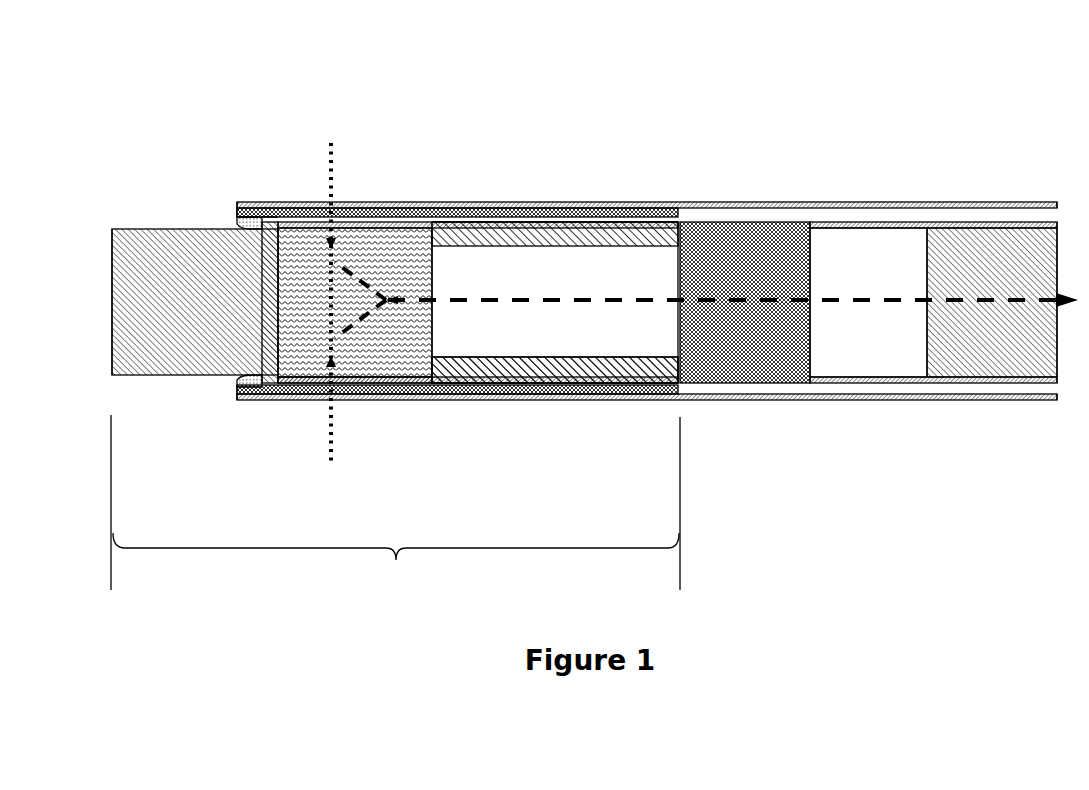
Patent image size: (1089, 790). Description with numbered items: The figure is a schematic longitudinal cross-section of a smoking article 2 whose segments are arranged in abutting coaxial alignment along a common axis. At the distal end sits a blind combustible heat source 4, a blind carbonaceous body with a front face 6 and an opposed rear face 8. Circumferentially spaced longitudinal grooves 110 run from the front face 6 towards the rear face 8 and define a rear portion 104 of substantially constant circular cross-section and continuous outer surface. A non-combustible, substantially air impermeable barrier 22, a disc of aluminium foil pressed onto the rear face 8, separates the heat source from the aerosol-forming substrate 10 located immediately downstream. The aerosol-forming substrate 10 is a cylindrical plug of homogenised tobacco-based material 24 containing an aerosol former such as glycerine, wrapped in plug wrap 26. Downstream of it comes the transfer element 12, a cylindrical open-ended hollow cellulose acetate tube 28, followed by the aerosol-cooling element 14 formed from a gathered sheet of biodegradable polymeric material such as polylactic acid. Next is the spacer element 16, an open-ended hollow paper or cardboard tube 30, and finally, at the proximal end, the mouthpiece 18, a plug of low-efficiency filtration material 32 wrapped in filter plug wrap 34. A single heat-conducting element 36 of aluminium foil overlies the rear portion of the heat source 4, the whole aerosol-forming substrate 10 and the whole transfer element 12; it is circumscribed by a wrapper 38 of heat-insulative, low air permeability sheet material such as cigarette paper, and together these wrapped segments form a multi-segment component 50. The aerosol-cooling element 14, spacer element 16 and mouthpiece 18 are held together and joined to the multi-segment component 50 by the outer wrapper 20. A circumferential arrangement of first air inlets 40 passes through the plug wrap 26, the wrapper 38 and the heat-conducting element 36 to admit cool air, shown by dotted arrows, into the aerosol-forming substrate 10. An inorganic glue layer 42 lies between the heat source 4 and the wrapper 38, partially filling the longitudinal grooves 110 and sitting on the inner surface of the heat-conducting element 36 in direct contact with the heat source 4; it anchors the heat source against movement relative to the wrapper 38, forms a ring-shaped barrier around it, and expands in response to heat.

The smoking article 2 is at (790, 180).
The blind combustible heat source 4 is at (148, 247).
The front face 6 is at (111, 305).
The rear face 8 is at (267, 308).
The aerosol-forming substrate 10 is at (407, 272).
The transfer element 12 is at (550, 270).
The aerosol-cooling element 14 is at (752, 328).
The spacer element 16 is at (867, 327).
The mouthpiece 18 is at (973, 255).
The outer wrapper 20 is at (705, 205).
The non-combustible substantially air impermeable barrier 22 is at (283, 262).
The homogenised tobacco-based material 24 is at (398, 328).
The plug wrap 26 is at (355, 380).
The cellulose acetate tube 28 is at (508, 373).
The paper or cardboard tube 30 is at (868, 382).
The filtration material 32 is at (987, 332).
The filter plug wrap 34 is at (992, 205).
The heat-conducting element 36 is at (680, 385).
The wrapper 38 is at (680, 388).
The first air inlets 40 is at (325, 200).
The inorganic glue layer 42 is at (237, 383).
The multi-segment component 50 is at (395, 502).
The rear portion 104 is at (262, 205).
The longitudinal grooves 110 is at (215, 228).